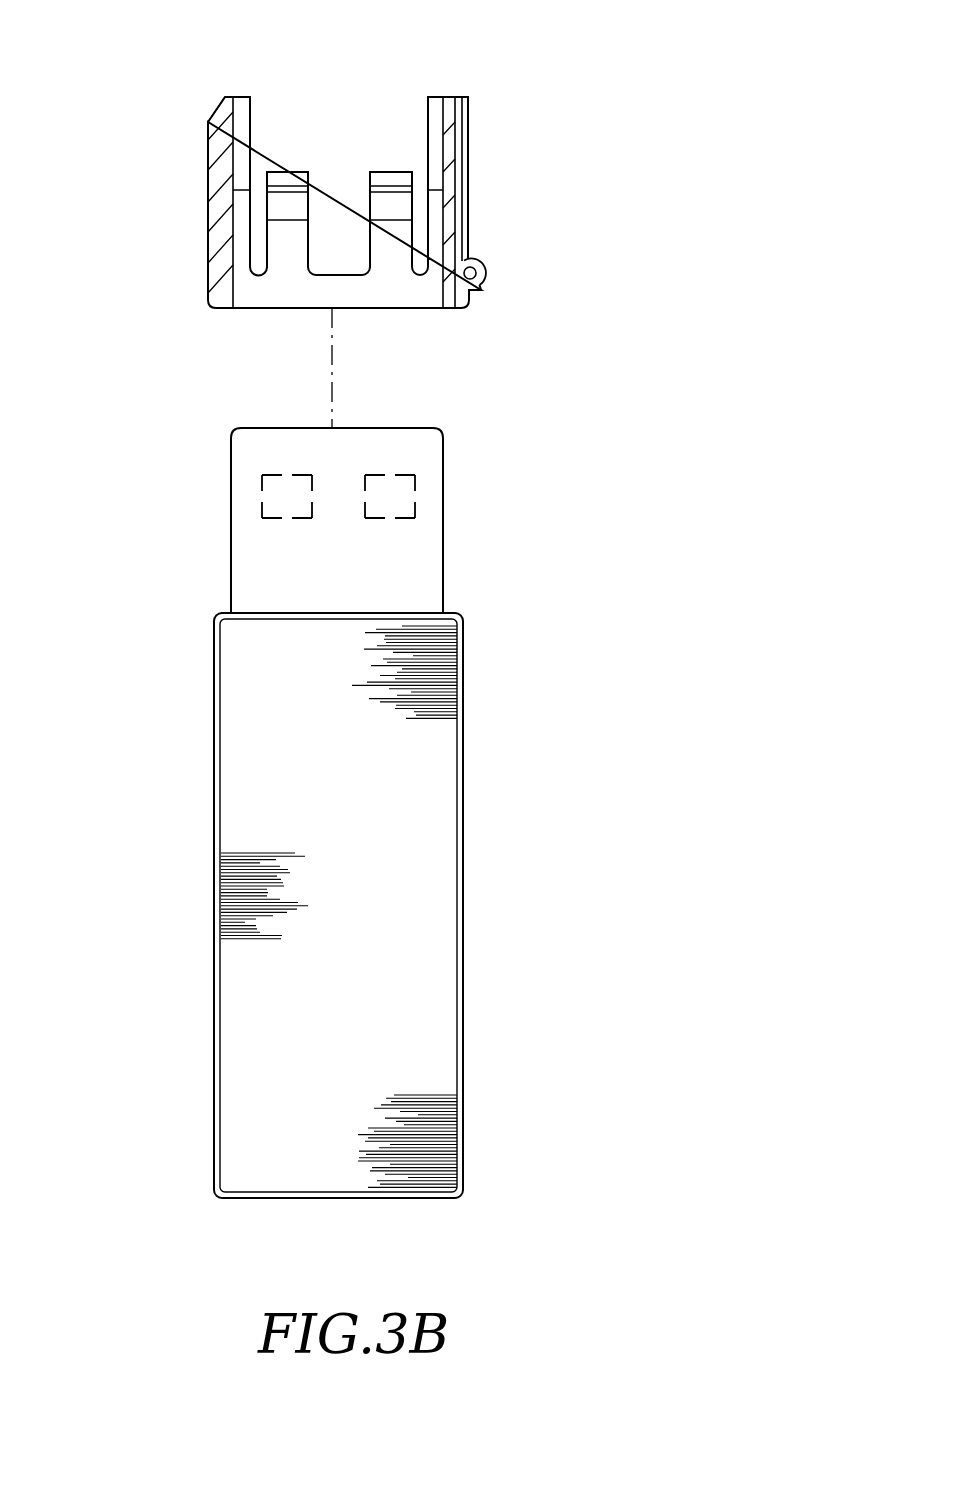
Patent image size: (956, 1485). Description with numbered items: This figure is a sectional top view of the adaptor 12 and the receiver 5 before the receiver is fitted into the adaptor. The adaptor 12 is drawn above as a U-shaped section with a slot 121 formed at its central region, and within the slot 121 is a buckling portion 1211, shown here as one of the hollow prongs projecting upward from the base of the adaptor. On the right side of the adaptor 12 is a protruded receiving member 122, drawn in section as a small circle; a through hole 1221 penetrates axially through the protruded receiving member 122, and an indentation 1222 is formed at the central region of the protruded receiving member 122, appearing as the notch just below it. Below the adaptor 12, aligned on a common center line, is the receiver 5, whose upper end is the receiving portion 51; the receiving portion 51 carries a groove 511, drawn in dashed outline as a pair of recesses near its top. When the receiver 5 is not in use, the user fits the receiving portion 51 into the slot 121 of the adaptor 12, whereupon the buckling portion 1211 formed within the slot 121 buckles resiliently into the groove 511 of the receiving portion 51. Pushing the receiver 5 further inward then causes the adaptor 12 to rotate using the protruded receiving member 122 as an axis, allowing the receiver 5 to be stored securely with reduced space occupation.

The adaptor 12 is at (448, 133).
The slot 121 is at (327, 138).
The buckling portion 1211 is at (277, 236).
The protruded receiving member 122 is at (483, 273).
The through hole 1221 is at (475, 260).
The indentation 1222 is at (483, 285).
The receiver 5 is at (490, 847).
The receiving portion 51 is at (420, 552).
The groove 511 is at (275, 497).